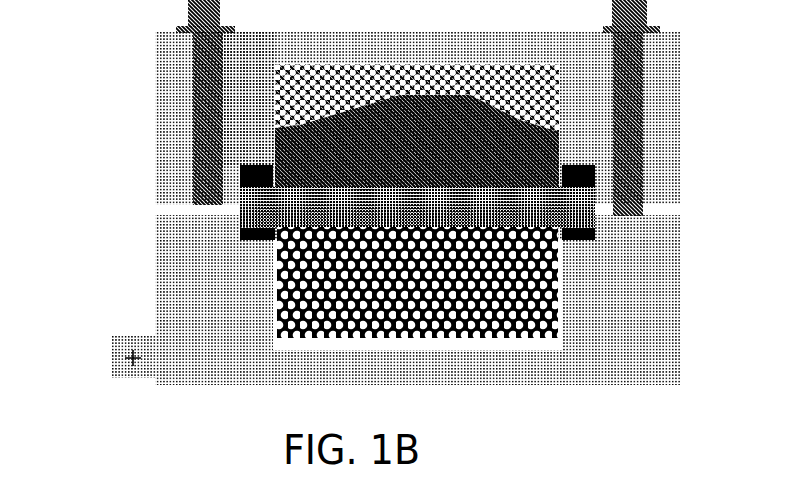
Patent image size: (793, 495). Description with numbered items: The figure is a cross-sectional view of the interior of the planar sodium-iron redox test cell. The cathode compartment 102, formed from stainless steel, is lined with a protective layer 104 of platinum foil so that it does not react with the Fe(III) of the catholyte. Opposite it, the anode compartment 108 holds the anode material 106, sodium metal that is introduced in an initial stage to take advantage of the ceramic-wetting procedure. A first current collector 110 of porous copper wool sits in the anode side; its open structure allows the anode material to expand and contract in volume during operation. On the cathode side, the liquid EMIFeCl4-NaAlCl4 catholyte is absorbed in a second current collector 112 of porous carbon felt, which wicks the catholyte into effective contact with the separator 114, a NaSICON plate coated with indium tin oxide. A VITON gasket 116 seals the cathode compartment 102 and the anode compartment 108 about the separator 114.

The cathode compartment 102 is at (232, 342).
The protective layer 104 is at (557, 347).
The anode material 106 is at (307, 137).
The anode compartment 108 is at (248, 78).
The first current collector 110 is at (298, 93).
The second current collector 112 is at (463, 310).
The separator 114 is at (245, 208).
The gasket 116 is at (565, 229).